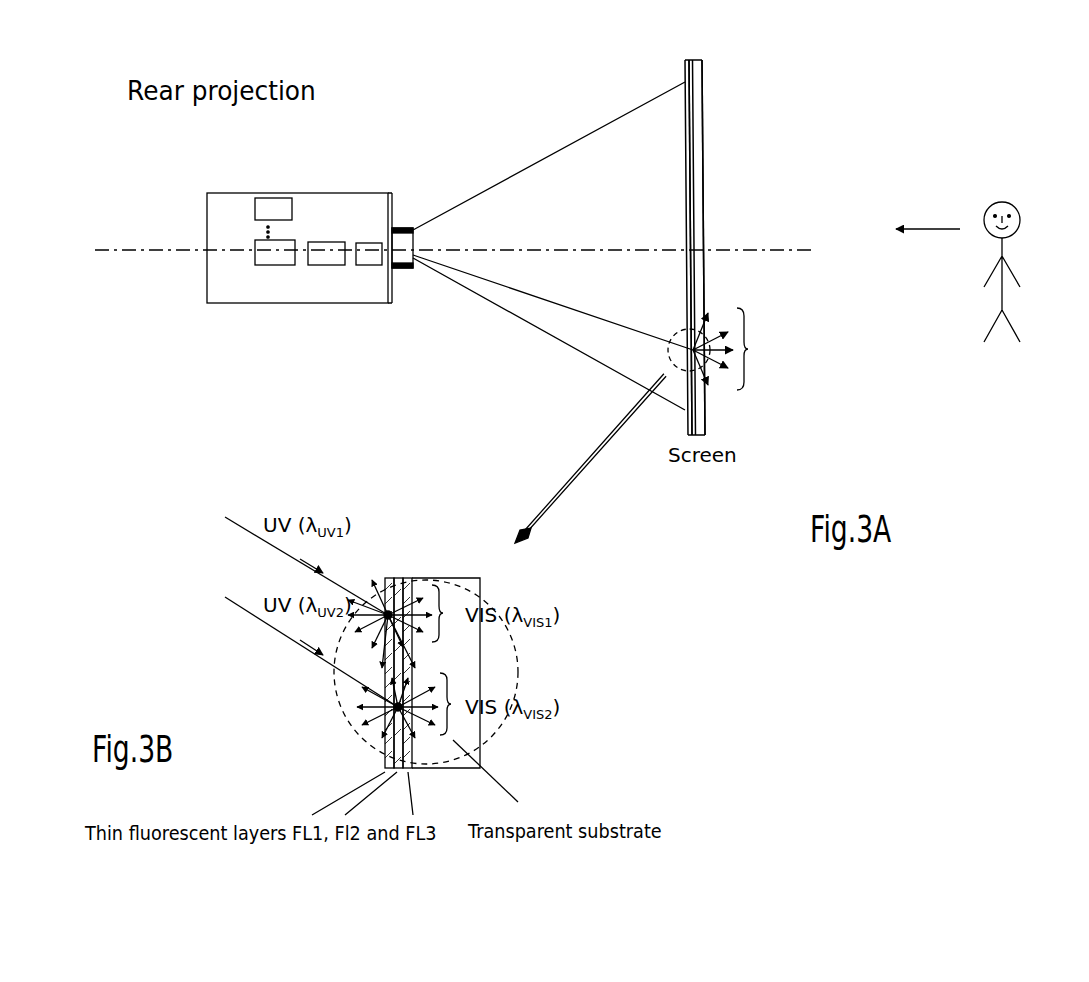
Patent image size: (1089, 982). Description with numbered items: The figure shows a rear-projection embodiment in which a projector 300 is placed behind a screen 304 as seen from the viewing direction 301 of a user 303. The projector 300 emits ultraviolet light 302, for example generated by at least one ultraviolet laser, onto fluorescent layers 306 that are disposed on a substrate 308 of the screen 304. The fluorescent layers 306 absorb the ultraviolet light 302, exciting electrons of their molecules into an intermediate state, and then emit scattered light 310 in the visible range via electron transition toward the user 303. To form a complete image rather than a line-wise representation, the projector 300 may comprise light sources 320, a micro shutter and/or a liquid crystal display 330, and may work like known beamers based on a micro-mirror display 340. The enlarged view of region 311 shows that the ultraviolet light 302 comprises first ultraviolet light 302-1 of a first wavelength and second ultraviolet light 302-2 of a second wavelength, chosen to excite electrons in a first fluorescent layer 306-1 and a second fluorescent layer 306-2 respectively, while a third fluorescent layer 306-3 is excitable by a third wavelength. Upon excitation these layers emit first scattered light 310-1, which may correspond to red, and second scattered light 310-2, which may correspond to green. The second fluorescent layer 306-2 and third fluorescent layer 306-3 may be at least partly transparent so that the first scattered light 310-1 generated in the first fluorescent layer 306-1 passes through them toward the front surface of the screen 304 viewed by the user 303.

In FIG. 3A, the projector 300 is at (222, 193).
In FIG. 3A, the viewing direction 301 is at (938, 228).
In FIG. 3A, the ultraviolet light 302 is at (542, 160).
In FIG. 3A, the user 303 is at (1020, 198).
In FIG. 3A, the screen 304 is at (705, 58).
In FIG. 3A, the fluorescent layers 306 is at (684, 72).
In FIG. 3A, the substrate 308 is at (699, 118).
In FIG. 3B, the substrate 308 is at (443, 772).
In FIG. 3A, the scattered light 310 is at (742, 349).
In FIG. 3A, the region 311 is at (682, 330).
In FIG. 3B, the region 311 is at (517, 652).
In FIG. 3A, the light sources 320 is at (268, 198).
In FIG. 3A, the liquid crystal display 330 is at (323, 265).
In FIG. 3A, the micro-mirror display 340 is at (368, 265).
In FIG. 3B, the first ultraviolet light 302-1 is at (232, 521).
In FIG. 3B, the second ultraviolet light 302-2 is at (232, 602).
In FIG. 3B, the first fluorescent layer 306-1 is at (388, 578).
In FIG. 3B, the second fluorescent layer 306-2 is at (398, 578).
In FIG. 3B, the third fluorescent layer 306-3 is at (408, 578).
In FIG. 3B, the first scattered light 310-1 is at (443, 613).
In FIG. 3B, the second scattered light 310-2 is at (451, 704).